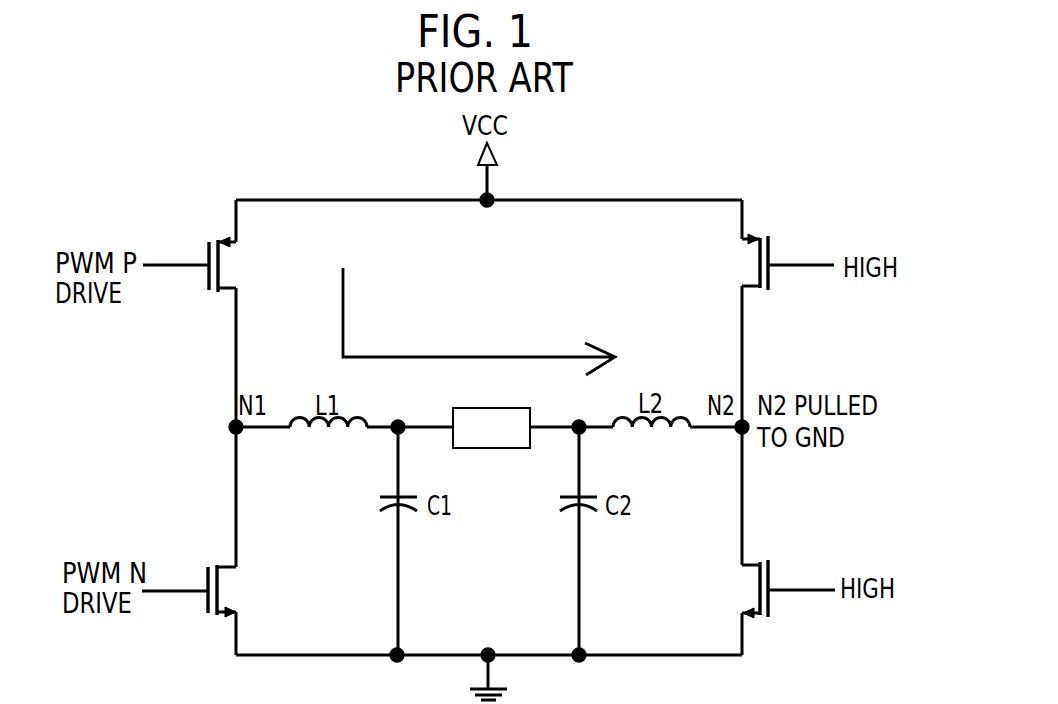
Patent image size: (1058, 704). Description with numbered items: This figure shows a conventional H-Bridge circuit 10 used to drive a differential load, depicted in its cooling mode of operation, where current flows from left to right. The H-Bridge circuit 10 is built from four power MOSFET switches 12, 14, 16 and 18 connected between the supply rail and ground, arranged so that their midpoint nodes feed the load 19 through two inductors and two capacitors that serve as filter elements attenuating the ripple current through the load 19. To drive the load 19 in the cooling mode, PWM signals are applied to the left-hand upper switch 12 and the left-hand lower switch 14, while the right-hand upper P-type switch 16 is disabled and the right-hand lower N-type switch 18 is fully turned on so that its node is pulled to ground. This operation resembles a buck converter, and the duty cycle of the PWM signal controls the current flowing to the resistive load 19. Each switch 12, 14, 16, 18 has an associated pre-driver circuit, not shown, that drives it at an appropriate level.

The H-Bridge circuit 10 is at (277, 168).
The switch 12 is at (237, 264).
The switch 14 is at (235, 588).
The switch 16 is at (743, 262).
The switch 18 is at (743, 587).
The load 19 is at (505, 448).